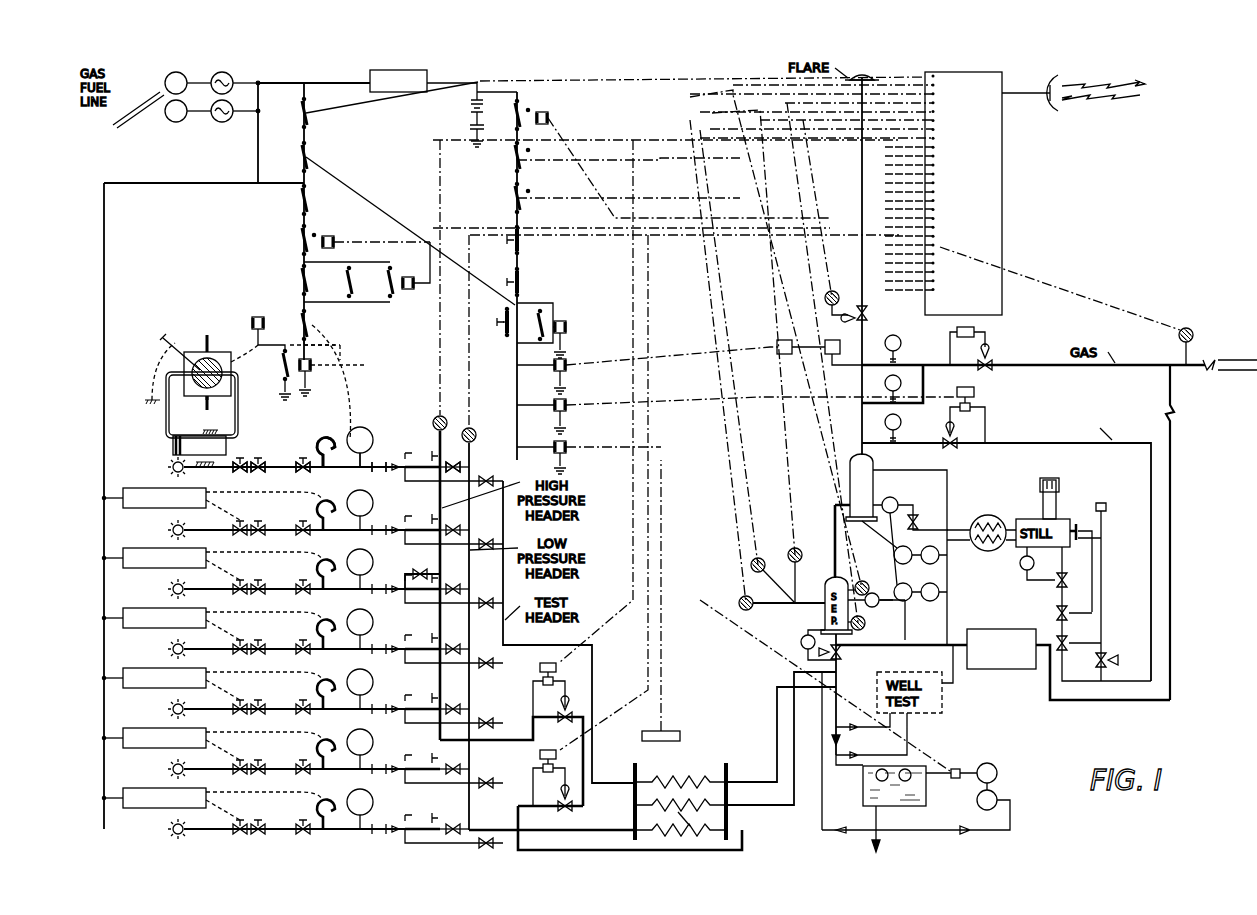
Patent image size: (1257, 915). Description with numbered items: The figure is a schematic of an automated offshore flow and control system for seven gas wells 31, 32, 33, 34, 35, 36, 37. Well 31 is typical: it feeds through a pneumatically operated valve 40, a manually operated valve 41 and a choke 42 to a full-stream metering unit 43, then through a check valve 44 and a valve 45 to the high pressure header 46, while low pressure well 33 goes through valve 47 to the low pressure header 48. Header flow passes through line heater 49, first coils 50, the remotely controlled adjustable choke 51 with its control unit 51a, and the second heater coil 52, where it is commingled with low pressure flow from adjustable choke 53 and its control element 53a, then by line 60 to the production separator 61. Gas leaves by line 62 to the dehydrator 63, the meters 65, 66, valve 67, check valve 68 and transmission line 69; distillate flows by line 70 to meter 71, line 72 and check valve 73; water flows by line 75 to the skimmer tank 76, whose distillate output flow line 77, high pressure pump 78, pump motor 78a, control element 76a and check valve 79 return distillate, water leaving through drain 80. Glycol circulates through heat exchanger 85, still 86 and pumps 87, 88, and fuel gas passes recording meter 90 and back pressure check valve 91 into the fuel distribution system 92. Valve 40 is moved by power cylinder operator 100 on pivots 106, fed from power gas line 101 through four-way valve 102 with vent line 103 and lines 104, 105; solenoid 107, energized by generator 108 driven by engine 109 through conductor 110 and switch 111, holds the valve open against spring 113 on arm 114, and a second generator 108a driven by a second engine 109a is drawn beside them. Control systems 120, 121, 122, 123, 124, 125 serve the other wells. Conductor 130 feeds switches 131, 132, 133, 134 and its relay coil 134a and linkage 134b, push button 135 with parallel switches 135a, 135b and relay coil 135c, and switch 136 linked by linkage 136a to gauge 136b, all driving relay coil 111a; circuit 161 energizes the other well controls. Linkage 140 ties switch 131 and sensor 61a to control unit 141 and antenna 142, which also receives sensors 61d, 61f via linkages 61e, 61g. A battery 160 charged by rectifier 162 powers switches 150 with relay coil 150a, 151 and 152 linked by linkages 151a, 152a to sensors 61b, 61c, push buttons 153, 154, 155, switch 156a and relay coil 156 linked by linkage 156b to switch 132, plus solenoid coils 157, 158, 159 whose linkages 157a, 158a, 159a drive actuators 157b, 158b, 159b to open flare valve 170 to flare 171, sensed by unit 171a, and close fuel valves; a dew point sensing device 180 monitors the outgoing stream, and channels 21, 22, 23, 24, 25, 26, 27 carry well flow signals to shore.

The channel 21 is at (360, 440).
The channel 22 is at (360, 503).
The channel 23 is at (360, 562).
The channel 24 is at (360, 622).
The channel 25 is at (360, 682).
The channel 26 is at (360, 742).
The channel 27 is at (360, 802).
The well 31 is at (168, 466).
The well 32 is at (168, 528).
The well 33 is at (168, 587).
The well 34 is at (168, 647).
The well 35 is at (168, 707).
The well 36 is at (168, 767).
The well 37 is at (168, 827).
The pneumatically operated valve 40 is at (242, 461).
The manually operated valve 41 is at (258, 470).
The choke 42 is at (303, 460).
The full-stream metering unit 43 is at (358, 470).
The check valve 44 is at (382, 462).
The valve 45 is at (454, 462).
The high pressure header 46 is at (471, 460).
The valve 47 is at (418, 569).
The low pressure header 48 is at (440, 570).
The line heater 49 is at (728, 820).
The first set of coils 50 is at (640, 828).
The remotely controlled adjustable choke 51 is at (560, 810).
The control unit 51a is at (540, 758).
The second heater coil 52 is at (691, 818).
The remotely controlled adjustable choke 53 is at (570, 712).
The control element 53a is at (540, 667).
The line 60 is at (793, 722).
The production separator 61 is at (825, 582).
The high level sensing unit 61a is at (865, 580).
The low pressure sensing unit 61b is at (752, 560).
The high pressure sensing unit 61c is at (739, 603).
The low level condition sensing unit 61d is at (859, 631).
The linkage 61e is at (722, 110).
The temperature sensing unit 61f is at (790, 548).
The linkage 61g is at (690, 97).
The line 62 is at (835, 540).
The dehydrator 63 is at (853, 458).
The meter 65 is at (901, 343).
The meter 66 is at (892, 384).
The valve 67 is at (988, 370).
The check valve 68 is at (1210, 358).
The transmission line 69 is at (1250, 370).
The line 70 is at (933, 648).
The meter 71 is at (985, 630).
The line 72 is at (1130, 702).
The check valve 73 is at (1175, 410).
The line 75 is at (838, 676).
The skimmer tank 76 is at (888, 806).
The control element 76a is at (957, 768).
The distillate output flow line 77 is at (975, 802).
The high pressure pump 78 is at (998, 798).
The pump motor 78a is at (995, 768).
The check valve 79 is at (850, 835).
The drain 80 is at (870, 773).
The heat exchanger 85 is at (992, 515).
The glycol dehydration reconcentrator unit 86 is at (1064, 516).
The pump 87 is at (933, 601).
The pump 88 is at (930, 564).
The recording meter 90 is at (901, 422).
The back pressure check valve 91 is at (953, 448).
The fuel distribution system 92 is at (1058, 440).
The power cylinder operator 100 is at (195, 435).
The power gas line 101 is at (205, 340).
The four-way valve 102 is at (222, 352).
The vent line 103 is at (209, 400).
The line 104 is at (166, 419).
The line 105 is at (238, 400).
The pivots 106 is at (188, 470).
The solenoid 107 is at (254, 318).
The alternating current generator 108 is at (233, 76).
The generator 108a is at (218, 119).
The gas powered engine 109 is at (165, 80).
The motor 109a is at (168, 118).
The conductor 110 is at (256, 172).
The switch 111 is at (280, 372).
The relay coil 111a is at (312, 372).
The spring 113 is at (150, 380).
The arm 114 is at (170, 338).
The control system 120 is at (212, 504).
The control system 121 is at (212, 564).
The control system 122 is at (212, 624).
The control system 123 is at (212, 684).
The control system 124 is at (212, 744).
The control system 125 is at (212, 804).
The conductor 130 is at (296, 84).
The switch 131 is at (300, 116).
The switch 132 is at (300, 157).
The switch 133 is at (300, 201).
The switch 134 is at (300, 241).
The relay coil 134a is at (329, 236).
The linkage 134b is at (392, 241).
The push button switch 135 is at (300, 278).
The switch 135a is at (346, 282).
The switch 135b is at (392, 272).
The relay coil 135c is at (409, 290).
The switch 136 is at (300, 325).
The linkage 136a is at (351, 395).
The pressure sensitive gauge 136b is at (322, 446).
The linkage 140 is at (388, 100).
The control unit 141 is at (988, 136).
The antenna 142 is at (1060, 105).
The switch 150 is at (513, 122).
The relay coil 150a is at (545, 112).
The switch 151 is at (513, 160).
The linkage 151a is at (572, 162).
The switch 152 is at (513, 200).
The linkage 152a is at (666, 187).
The push button switch 153 is at (512, 248).
The push button switch 154 is at (510, 288).
The push button switch 155 is at (504, 334).
The relay coil 156 is at (568, 324).
The switch 156a is at (560, 308).
The linkage 156b is at (352, 188).
The solenoid coil 157 is at (568, 366).
The linkage 157a is at (570, 368).
The actuator 157b is at (778, 340).
The solenoid coil 158 is at (568, 406).
The linkage 158a is at (570, 410).
The actuator 158b is at (975, 392).
The solenoid coil 159 is at (568, 448).
The linkage 159a is at (584, 450).
The actuator 159b is at (683, 601).
The battery 160 is at (470, 108).
The circuit 161 is at (170, 185).
The rectifier 162 is at (427, 76).
The valve 170 is at (869, 315).
The flare 171 is at (870, 76).
The sensing unit 171a is at (829, 294).
The dew point sensing device 180 is at (1074, 306).